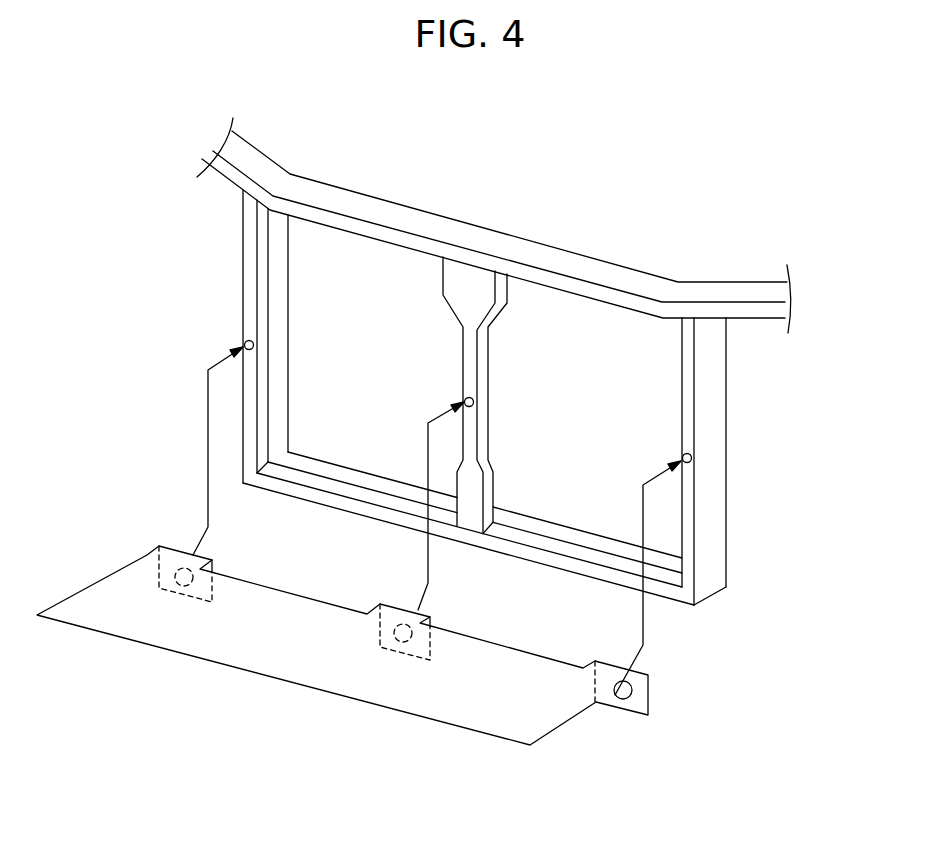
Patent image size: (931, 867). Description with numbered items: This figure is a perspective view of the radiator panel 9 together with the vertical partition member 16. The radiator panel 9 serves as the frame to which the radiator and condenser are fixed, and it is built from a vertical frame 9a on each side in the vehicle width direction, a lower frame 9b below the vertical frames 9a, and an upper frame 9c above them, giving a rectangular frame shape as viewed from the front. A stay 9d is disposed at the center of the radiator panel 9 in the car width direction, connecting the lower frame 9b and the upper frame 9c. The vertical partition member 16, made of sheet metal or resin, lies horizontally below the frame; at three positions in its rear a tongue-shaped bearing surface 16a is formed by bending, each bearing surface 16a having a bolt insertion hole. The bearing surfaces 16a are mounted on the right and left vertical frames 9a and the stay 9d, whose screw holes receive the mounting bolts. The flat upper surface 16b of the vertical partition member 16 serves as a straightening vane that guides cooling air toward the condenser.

The radiator panel 9 is at (489, 361).
The vertical frame 9a is at (252, 273).
The lower frame 9b is at (323, 505).
The upper frame 9c is at (407, 214).
The stay 9d is at (483, 350).
The vertical partition member 16 is at (393, 585).
The bearing surface 16a is at (158, 578).
The upper surface 16b is at (240, 655).